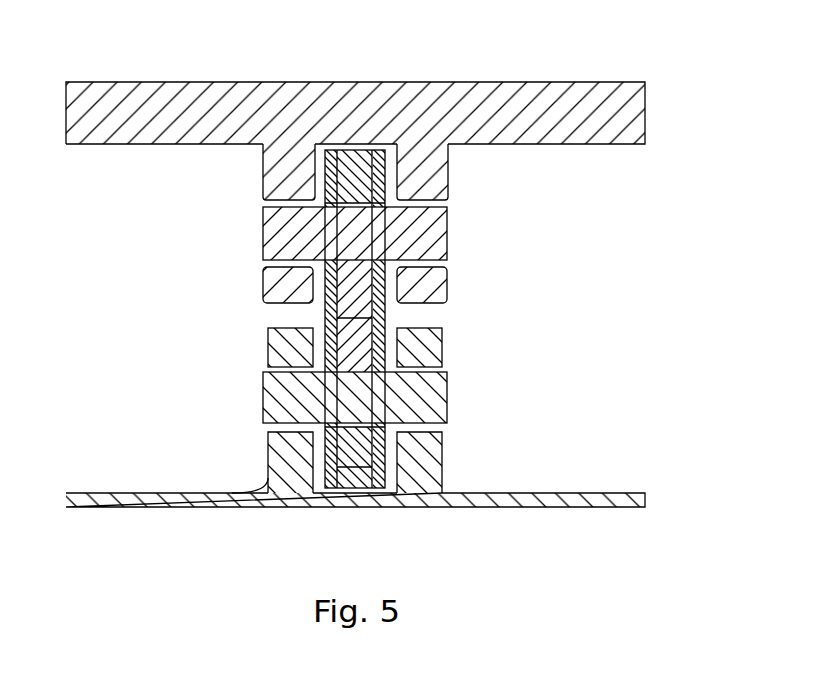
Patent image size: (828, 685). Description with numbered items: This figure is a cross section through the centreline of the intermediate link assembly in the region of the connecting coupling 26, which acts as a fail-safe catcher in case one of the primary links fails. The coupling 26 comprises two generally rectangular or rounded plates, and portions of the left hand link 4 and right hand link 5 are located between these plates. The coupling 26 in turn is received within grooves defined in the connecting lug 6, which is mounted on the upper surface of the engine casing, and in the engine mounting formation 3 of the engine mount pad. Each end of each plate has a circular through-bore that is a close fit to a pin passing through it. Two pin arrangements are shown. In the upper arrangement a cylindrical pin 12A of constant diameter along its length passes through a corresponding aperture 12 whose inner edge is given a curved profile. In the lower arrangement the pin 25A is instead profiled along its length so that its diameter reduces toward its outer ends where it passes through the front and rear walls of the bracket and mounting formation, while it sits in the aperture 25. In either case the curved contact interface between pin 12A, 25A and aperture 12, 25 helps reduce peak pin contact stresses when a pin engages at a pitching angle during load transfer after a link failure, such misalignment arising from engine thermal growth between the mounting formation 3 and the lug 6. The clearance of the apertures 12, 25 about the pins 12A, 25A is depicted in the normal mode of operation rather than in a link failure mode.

The engine mounting formation 3 is at (393, 105).
The left hand link 4 is at (345, 278).
The right hand link 5 is at (335, 352).
The connecting lug 6 is at (285, 458).
The aperture 12 is at (452, 198).
The cylindrical pin 12A is at (423, 228).
The aperture 25 is at (440, 368).
The pin 25A is at (427, 398).
The connecting coupling 26 is at (400, 478).